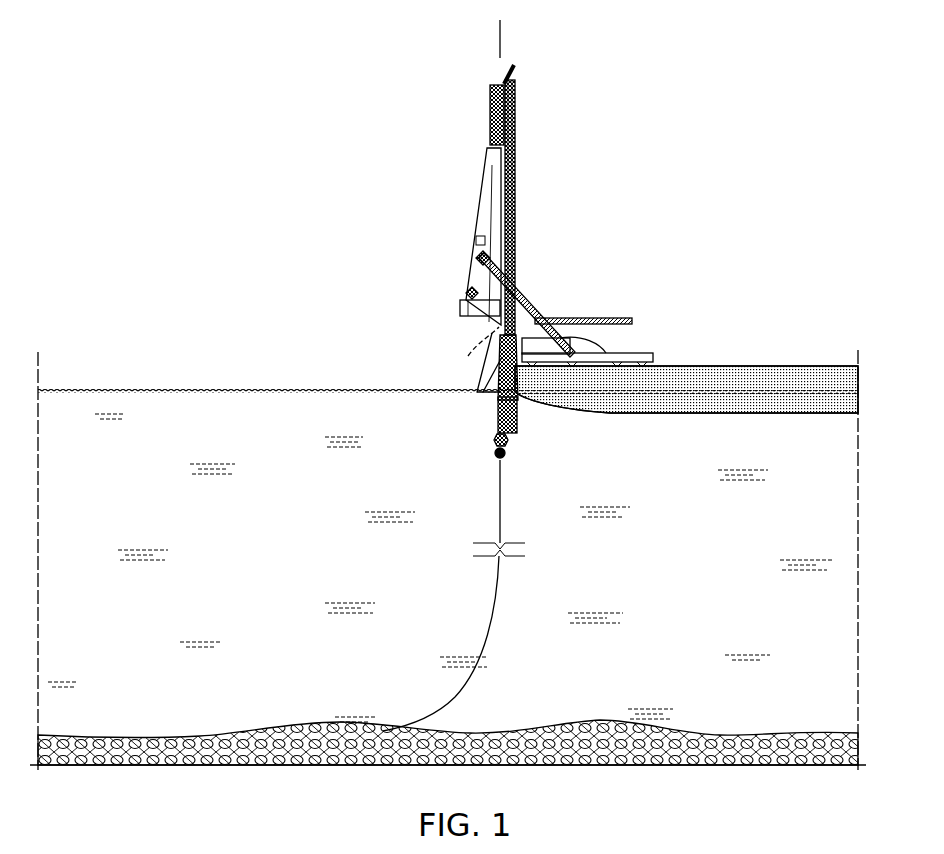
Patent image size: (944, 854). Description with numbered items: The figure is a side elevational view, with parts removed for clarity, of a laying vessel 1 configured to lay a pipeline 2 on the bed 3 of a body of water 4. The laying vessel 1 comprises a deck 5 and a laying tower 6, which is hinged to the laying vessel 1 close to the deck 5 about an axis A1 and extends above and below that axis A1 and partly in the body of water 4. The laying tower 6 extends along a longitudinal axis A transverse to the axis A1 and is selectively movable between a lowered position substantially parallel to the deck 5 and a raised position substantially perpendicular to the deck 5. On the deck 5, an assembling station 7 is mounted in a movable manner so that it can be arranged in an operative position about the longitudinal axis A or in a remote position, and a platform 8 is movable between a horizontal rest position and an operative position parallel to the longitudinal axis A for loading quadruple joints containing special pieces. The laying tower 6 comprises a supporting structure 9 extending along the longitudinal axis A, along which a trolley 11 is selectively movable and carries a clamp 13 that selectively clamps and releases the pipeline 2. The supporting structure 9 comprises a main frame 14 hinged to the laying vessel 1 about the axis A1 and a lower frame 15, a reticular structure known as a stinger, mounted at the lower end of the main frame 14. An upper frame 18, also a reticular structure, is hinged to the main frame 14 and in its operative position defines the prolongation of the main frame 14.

The laying vessel 1 is at (826, 245).
The pipeline 2 is at (490, 633).
The bed 3 is at (580, 722).
The body of water 4 is at (343, 408).
The deck 5 is at (747, 358).
The laying tower 6 is at (544, 221).
The assembling station 7 is at (540, 320).
The platform 8 is at (605, 319).
The supporting structure 9 is at (470, 195).
The trolley 11 is at (486, 443).
The clamp 13 is at (518, 452).
The main frame 14 is at (459, 253).
The lower frame 15 is at (488, 418).
The upper frame 18 is at (472, 92).
The longitudinal axis A is at (502, 34).
The axis A1 is at (470, 357).